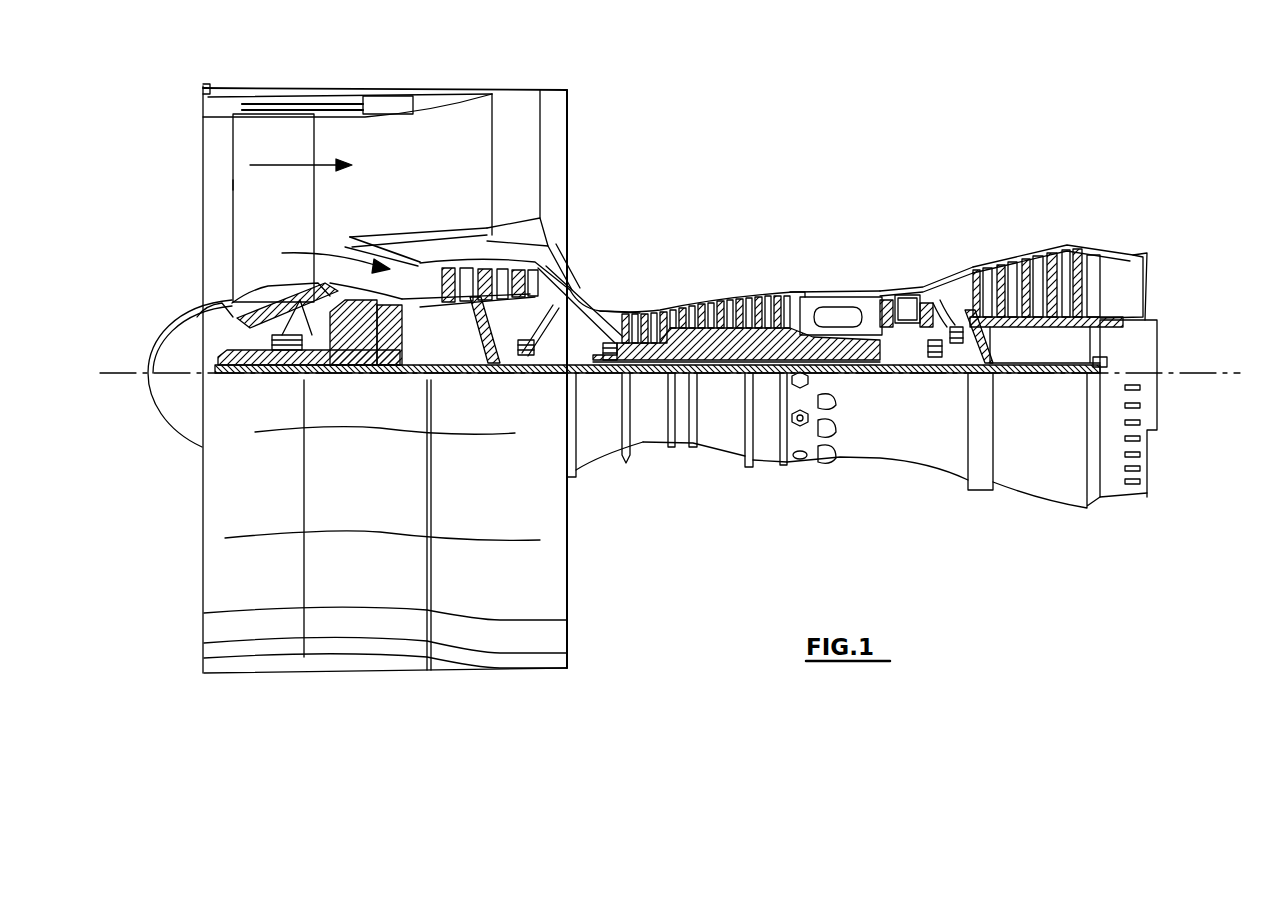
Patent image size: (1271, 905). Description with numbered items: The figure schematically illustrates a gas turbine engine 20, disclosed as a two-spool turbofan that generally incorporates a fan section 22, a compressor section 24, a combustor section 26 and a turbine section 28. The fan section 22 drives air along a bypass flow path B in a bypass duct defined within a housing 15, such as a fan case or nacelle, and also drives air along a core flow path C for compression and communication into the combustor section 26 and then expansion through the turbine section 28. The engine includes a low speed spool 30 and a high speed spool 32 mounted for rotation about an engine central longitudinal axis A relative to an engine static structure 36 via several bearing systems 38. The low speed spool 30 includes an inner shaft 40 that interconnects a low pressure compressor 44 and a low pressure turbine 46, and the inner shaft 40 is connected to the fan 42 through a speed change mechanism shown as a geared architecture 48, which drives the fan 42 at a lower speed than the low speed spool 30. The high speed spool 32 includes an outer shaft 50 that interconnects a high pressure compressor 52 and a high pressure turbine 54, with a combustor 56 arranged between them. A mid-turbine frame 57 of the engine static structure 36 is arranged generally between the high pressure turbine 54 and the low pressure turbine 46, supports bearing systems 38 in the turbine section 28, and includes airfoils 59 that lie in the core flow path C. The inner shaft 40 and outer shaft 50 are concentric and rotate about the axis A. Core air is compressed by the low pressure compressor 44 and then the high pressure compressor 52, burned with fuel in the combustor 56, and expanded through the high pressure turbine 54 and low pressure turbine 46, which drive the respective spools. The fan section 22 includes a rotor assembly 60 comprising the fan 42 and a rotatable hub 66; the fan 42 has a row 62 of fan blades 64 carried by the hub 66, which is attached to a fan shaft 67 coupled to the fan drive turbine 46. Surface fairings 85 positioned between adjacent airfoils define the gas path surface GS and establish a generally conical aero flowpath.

The housing 15 is at (385, 95).
The gas turbine engine 20 is at (855, 126).
The fan section 22 is at (311, 80).
The compressor section 24 is at (620, 272).
The combustor section 26 is at (838, 258).
The turbine section 28 is at (990, 225).
The low speed spool 30 is at (730, 392).
The high speed spool 32 is at (765, 350).
The engine static structure 36 is at (765, 475).
The bearing systems 38 is at (522, 365).
The inner shaft 40 is at (592, 380).
The fan 42 is at (287, 220).
The low pressure compressor 44 is at (482, 287).
The low pressure turbine 46 is at (1030, 265).
The geared architecture 48 is at (390, 364).
The outer shaft 50 is at (848, 373).
The high pressure compressor 52 is at (698, 353).
The high pressure turbine 54 is at (903, 293).
The combustor 56 is at (842, 312).
The mid-turbine frame 57 is at (956, 270).
The airfoils 59 is at (960, 340).
The rotor assembly 60 is at (176, 354).
The row of airfoils 62 is at (238, 83).
The fan blades 64 is at (248, 185).
The hub 66 is at (207, 303).
The fan shaft 67 is at (270, 366).
The surface fairings 85 is at (245, 290).
The engine central longitudinal axis A is at (1236, 373).
The bypass flow path B is at (290, 165).
The core flow path C is at (443, 280).
The gas path surface GS is at (263, 278).